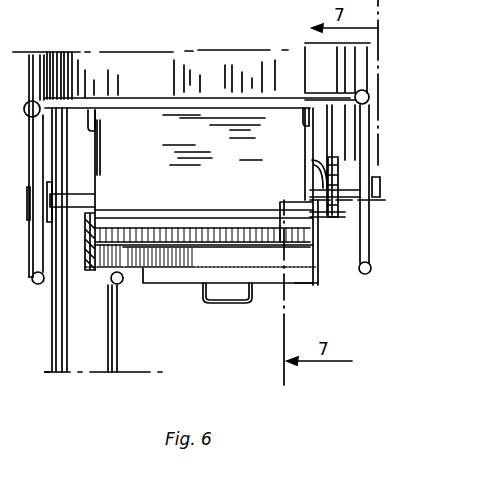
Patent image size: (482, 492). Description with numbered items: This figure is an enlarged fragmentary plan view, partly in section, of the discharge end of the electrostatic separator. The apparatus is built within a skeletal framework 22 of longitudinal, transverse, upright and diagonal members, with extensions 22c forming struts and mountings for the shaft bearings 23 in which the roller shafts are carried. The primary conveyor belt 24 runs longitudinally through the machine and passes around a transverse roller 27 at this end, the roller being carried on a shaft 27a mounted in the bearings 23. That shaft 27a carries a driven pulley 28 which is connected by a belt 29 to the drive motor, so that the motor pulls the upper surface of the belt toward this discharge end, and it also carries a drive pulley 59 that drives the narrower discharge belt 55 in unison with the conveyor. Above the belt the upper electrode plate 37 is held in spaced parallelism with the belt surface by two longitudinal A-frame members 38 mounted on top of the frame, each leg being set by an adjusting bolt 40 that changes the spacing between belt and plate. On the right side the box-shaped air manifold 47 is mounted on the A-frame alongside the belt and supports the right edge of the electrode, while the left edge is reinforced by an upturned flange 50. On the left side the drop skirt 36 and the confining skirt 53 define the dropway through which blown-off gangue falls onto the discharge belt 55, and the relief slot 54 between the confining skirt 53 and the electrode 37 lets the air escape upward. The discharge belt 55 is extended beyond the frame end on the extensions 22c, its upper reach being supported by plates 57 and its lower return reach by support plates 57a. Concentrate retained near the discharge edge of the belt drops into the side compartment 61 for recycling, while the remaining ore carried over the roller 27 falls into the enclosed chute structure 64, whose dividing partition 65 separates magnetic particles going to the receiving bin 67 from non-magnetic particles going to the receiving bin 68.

The skeletal framework 22 is at (28, 66).
The extensions 22c is at (118, 352).
The shaft bearings 23 is at (376, 192).
The primary conveyor belt 24 is at (204, 189).
The transverse rollers 27 is at (97, 176).
The shafts 27a is at (82, 195).
The driven pulley 28 is at (315, 172).
The belt 29 is at (327, 133).
The carrier-plate drop skirt 36 is at (16, 296).
The upper electrode plate 37 is at (147, 57).
The A-frame members 38 is at (43, 78).
The adjusting bolt 40 is at (30, 105).
The manifold 47 is at (316, 50).
The upturned flange 50 is at (66, 53).
The confining skirt 53 is at (50, 52).
The relief slot 54 is at (62, 38).
The discharge belt 55 is at (75, 240).
The plates 57 is at (26, 350).
The support plates 57a is at (24, 389).
The drive pulley 59 is at (45, 188).
The side compartment 61 is at (90, 247).
The chute structure 64 is at (292, 270).
The dividing partition 65 is at (228, 246).
The receiving bin 67 is at (183, 258).
The receiving bin 68 is at (192, 235).